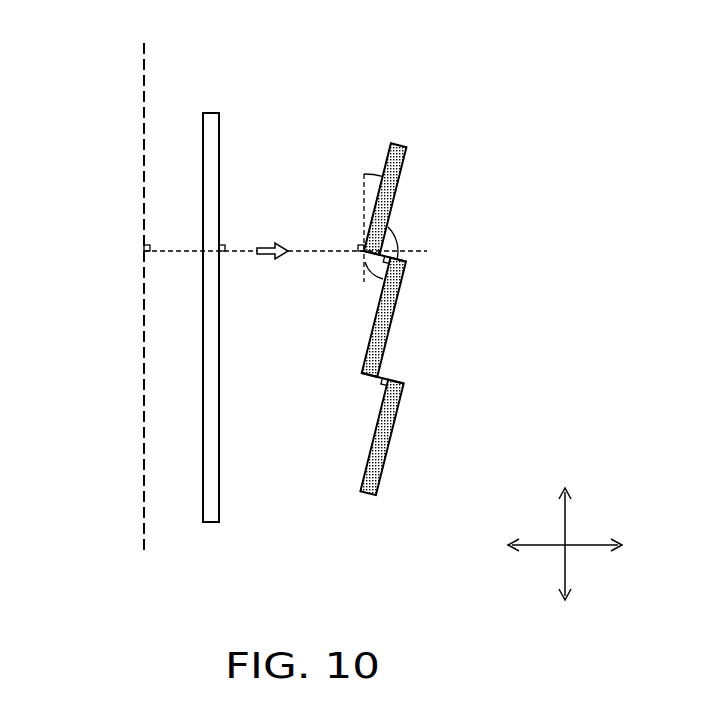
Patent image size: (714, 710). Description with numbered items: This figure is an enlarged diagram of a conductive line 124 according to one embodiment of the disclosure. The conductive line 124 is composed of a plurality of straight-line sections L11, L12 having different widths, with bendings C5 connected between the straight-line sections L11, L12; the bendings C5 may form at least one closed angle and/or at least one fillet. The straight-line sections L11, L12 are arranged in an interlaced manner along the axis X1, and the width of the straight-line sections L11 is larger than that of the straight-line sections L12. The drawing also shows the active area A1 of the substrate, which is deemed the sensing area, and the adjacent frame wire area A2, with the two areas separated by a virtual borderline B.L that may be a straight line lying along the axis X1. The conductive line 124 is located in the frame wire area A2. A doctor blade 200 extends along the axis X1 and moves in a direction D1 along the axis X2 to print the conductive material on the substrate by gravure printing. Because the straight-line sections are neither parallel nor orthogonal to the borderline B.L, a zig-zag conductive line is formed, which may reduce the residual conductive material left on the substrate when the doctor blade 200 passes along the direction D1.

The conductive line 124 is at (438, 295).
The doctor blade 200 is at (210, 522).
The straight-line section L11 is at (400, 170).
The straight-line section L12 is at (392, 252).
The bending C5 is at (356, 258).
The direction D1 is at (270, 246).
The active area A1 is at (50, 67).
The frame wire area A2 is at (347, 67).
The virtual borderline B.L is at (144, 285).
The axis X1 is at (565, 531).
The axis X2 is at (581, 549).